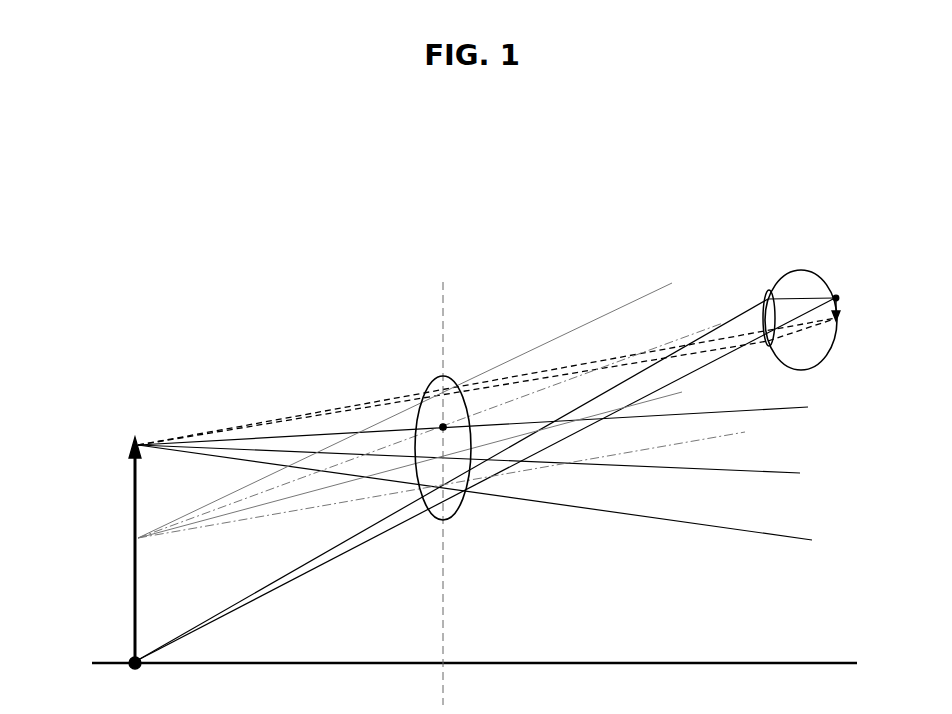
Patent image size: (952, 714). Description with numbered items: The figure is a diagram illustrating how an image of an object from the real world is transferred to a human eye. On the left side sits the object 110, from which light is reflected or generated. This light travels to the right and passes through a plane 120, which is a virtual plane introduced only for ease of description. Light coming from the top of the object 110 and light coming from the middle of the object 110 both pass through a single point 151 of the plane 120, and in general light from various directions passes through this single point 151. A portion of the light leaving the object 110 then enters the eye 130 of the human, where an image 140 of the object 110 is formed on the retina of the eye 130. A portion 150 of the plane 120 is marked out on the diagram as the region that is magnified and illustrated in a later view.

The object 110 is at (133, 502).
The plane 120 is at (442, 308).
The eye 130 is at (799, 270).
The image 140 is at (840, 297).
The portion 150 is at (434, 378).
The single point 151 is at (443, 427).